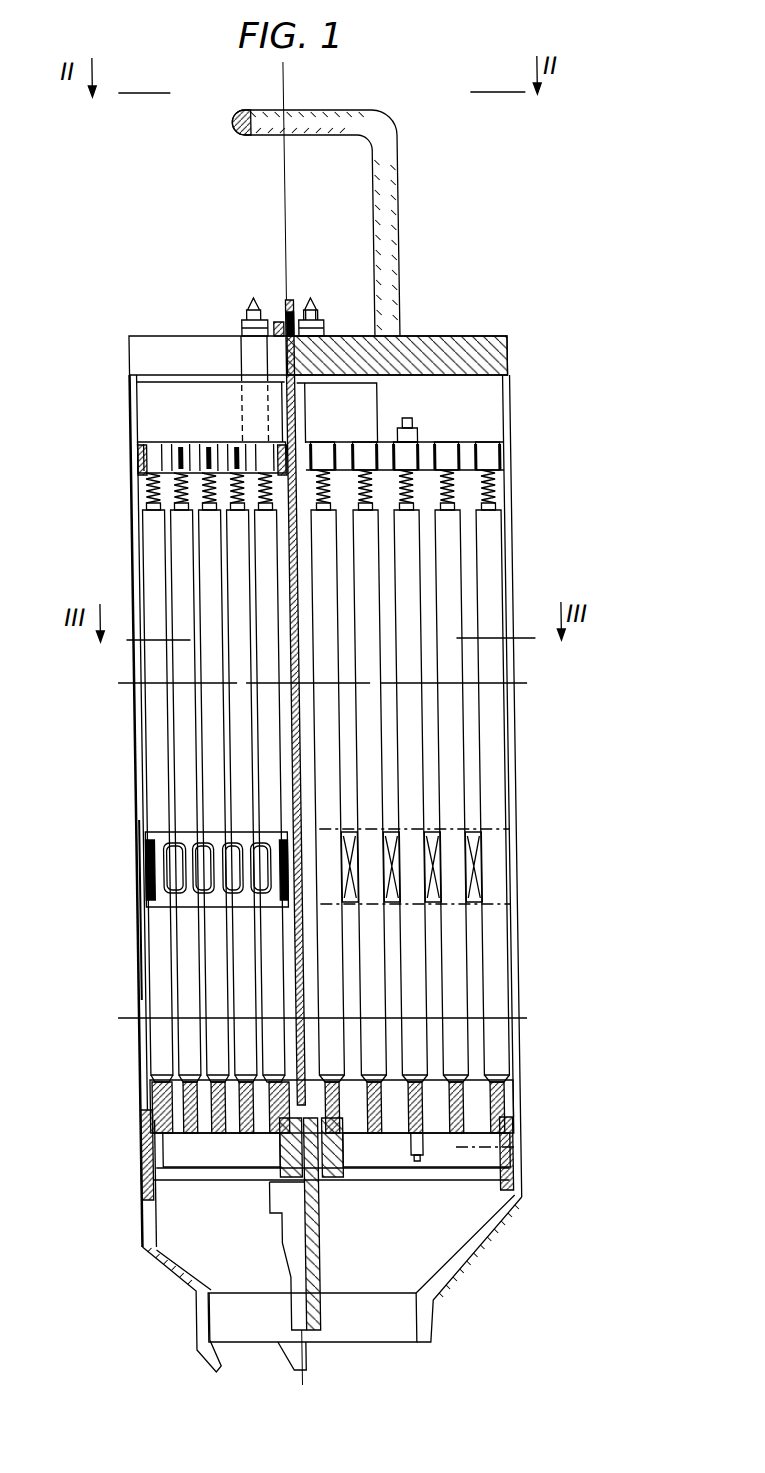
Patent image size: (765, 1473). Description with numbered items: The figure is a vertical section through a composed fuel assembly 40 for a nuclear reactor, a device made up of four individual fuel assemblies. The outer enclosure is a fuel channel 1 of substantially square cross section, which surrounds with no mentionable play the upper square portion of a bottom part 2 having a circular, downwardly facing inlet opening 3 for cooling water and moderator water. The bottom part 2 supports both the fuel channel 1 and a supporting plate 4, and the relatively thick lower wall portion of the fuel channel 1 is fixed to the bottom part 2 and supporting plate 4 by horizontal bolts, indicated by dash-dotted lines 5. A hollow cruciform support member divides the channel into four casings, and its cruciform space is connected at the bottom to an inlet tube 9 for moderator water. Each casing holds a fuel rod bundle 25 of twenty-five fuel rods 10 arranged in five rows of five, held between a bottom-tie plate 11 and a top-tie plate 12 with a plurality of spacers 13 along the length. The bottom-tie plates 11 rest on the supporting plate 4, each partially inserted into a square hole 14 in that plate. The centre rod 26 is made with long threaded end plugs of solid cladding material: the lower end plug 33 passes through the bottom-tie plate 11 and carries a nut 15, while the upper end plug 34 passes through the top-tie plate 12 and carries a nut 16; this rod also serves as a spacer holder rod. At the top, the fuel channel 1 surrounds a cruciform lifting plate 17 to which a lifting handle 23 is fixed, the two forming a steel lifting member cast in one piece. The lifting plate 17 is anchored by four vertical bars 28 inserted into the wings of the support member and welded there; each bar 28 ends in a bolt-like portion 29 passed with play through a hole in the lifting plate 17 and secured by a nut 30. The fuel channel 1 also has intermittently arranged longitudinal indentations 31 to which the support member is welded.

The fuel channel 1 is at (506, 745).
The bottom part 2 is at (132, 1244).
The inlet opening 3 is at (347, 1320).
The supporting plate 4 is at (160, 1178).
The horizontal bolts 5 is at (506, 1150).
The inlet tube 9 is at (272, 1316).
The fuel rods 10 is at (492, 600).
The bottom-tie plate 11 is at (489, 1105).
The top-tie plate 12 is at (470, 462).
The spacers 13 is at (492, 867).
The square hole 14 is at (352, 1147).
The nut 15 is at (424, 1140).
The nut 16 is at (408, 428).
The lifting plate 17 is at (351, 366).
The lifting handle 23 is at (360, 110).
The fuel rod bundle 25 is at (465, 545).
The centre rod 26 is at (415, 662).
The vertical bars 28 is at (243, 418).
The bolt-like portion 29 is at (311, 299).
The nut 30 is at (250, 340).
The indentations 31 is at (131, 905).
The lower end plug 33 is at (470, 1066).
The upper end plug 34 is at (445, 444).
The composed fuel assembly 40 is at (526, 370).